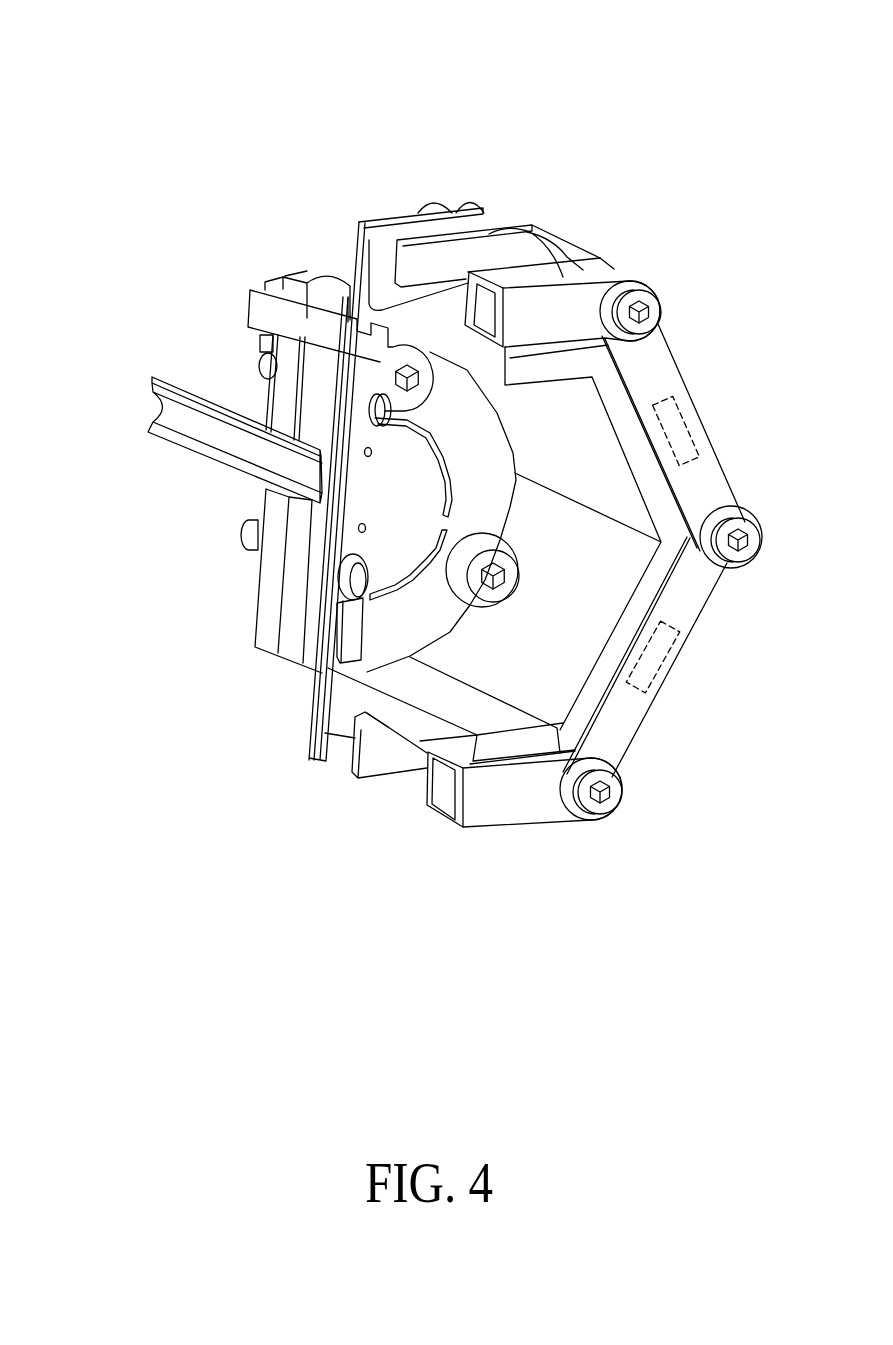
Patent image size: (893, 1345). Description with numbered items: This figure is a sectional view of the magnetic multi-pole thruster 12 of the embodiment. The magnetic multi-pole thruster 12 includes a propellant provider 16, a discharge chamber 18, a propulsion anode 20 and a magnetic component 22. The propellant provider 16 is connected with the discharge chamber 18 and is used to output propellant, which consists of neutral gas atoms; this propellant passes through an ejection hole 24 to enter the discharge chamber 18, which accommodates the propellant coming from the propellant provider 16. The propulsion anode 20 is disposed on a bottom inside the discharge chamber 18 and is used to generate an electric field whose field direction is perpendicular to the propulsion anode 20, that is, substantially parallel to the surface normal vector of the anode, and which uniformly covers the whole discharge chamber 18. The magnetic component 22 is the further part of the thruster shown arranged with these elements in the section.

The magnetic multi-pole thruster 12 is at (172, 79).
The propellant provider 16 is at (297, 516).
The discharge chamber 18 is at (590, 447).
The propulsion anode 20 is at (468, 417).
The magnetic component 22 is at (484, 305).
The ejection hole 24 is at (373, 418).